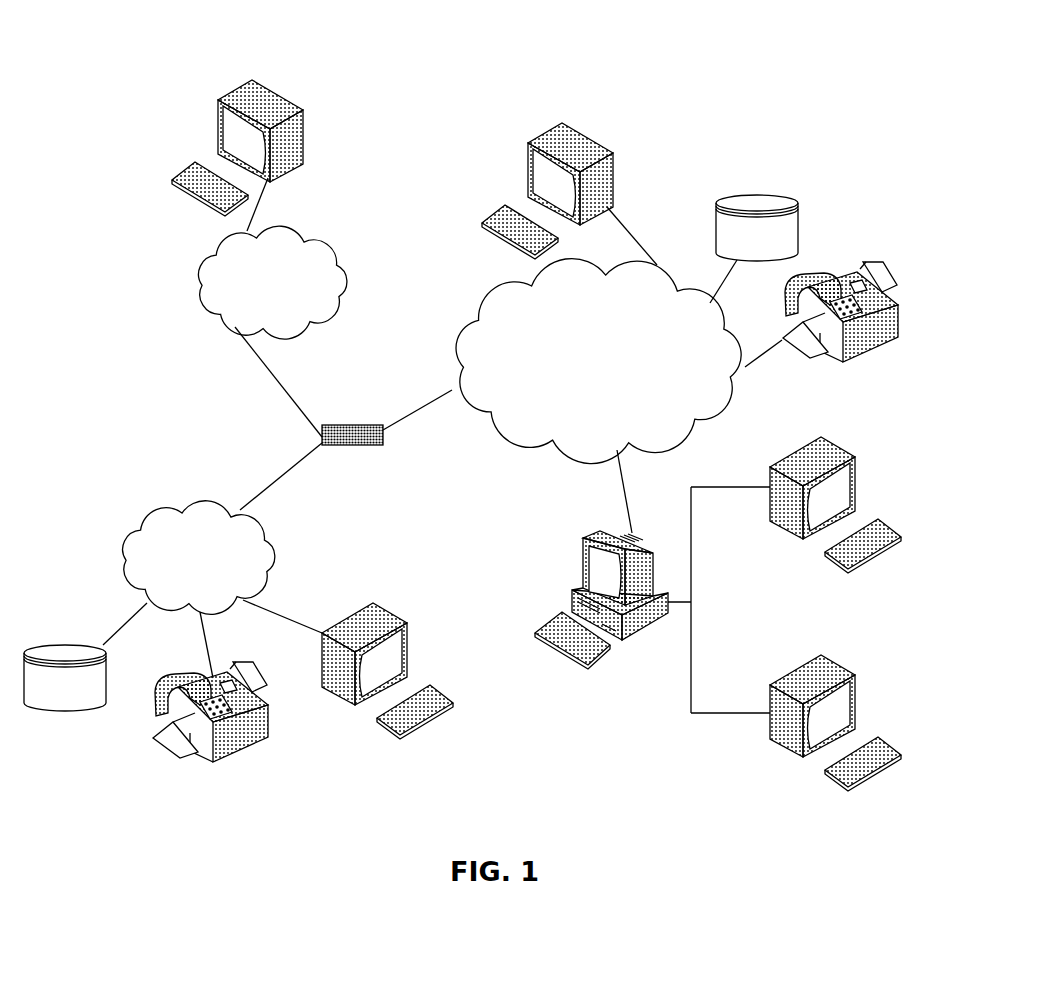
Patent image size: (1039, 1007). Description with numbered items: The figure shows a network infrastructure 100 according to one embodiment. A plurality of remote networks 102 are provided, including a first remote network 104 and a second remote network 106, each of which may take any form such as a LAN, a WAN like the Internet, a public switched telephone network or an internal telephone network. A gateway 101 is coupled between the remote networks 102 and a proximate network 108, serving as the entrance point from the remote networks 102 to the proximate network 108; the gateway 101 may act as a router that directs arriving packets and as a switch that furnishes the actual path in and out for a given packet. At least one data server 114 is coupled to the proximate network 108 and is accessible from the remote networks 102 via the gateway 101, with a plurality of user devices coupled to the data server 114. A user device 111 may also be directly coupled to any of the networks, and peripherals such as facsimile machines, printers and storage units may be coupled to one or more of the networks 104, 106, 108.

The network infrastructure 100 is at (148, 60).
The gateway 101 is at (335, 424).
The remote networks 102 is at (168, 352).
The first remote network 104 is at (124, 533).
The second remote network 106 is at (345, 256).
The proximate network 108 is at (703, 425).
The user device 111 is at (613, 156).
The data server 114 is at (583, 553).